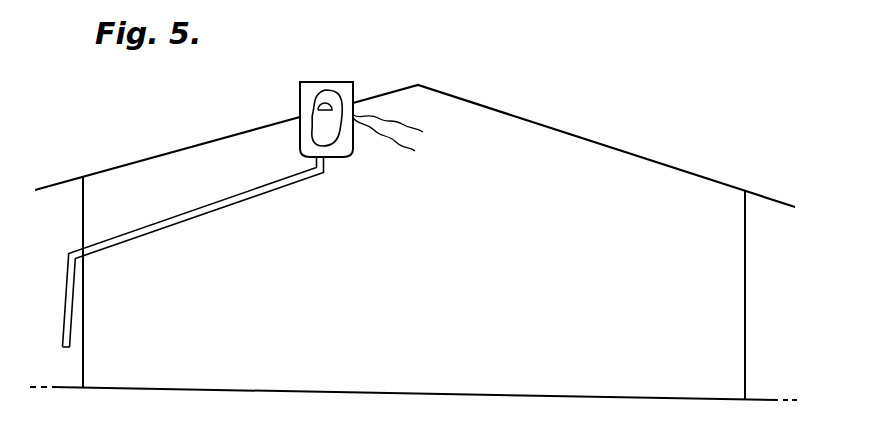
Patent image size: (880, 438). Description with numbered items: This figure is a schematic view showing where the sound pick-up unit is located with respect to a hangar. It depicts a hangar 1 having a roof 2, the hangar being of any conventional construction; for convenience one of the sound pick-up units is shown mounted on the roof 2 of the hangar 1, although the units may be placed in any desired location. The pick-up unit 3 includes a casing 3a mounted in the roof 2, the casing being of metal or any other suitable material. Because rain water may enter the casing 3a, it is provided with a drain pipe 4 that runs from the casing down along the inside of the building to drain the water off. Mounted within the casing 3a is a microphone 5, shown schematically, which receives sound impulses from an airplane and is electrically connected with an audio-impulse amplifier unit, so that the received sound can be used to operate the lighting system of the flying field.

The hangar 1 is at (588, 156).
The roof 2 is at (527, 121).
The pick-up unit 3 is at (355, 84).
The casing 3a is at (300, 99).
The drain pipe 4 is at (248, 198).
The microphone 5 is at (325, 110).